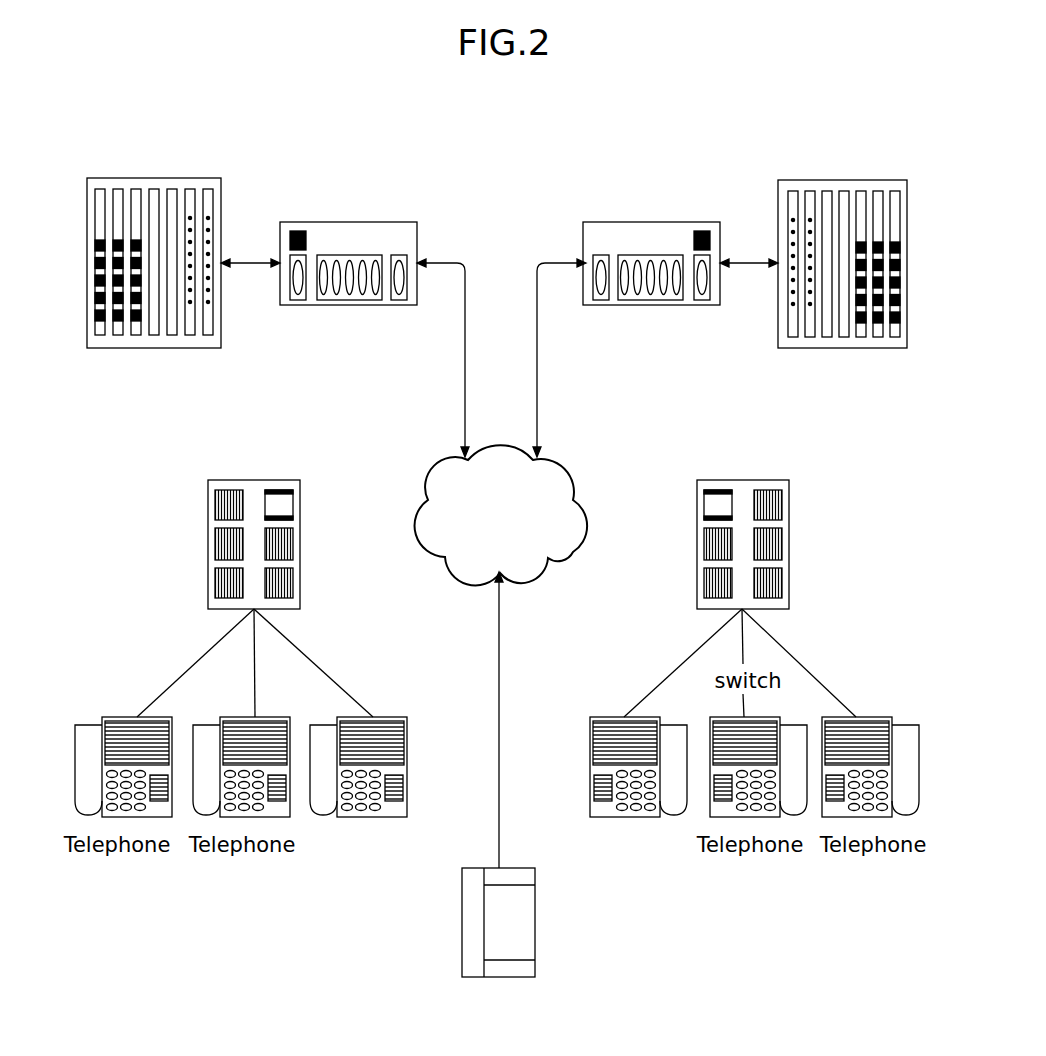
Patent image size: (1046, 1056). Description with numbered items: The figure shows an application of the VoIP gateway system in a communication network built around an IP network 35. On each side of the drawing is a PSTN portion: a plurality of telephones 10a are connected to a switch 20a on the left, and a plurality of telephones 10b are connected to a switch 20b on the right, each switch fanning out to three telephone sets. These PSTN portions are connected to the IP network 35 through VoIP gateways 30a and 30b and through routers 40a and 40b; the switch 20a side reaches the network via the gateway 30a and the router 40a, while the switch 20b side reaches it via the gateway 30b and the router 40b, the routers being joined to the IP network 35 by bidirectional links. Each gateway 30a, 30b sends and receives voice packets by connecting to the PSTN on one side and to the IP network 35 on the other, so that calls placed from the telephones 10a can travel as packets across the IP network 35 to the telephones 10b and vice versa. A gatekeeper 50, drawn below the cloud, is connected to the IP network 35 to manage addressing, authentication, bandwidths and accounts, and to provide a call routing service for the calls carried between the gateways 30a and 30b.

The telephone 10a is at (403, 771).
The telephone 10b is at (594, 771).
The switch 20a is at (288, 564).
The switch 20b is at (708, 564).
The VoIP gateway 30a is at (153, 187).
The VoIP gateway 30b is at (845, 189).
The IP network 35 is at (570, 476).
The router 40a is at (350, 231).
The router 40b is at (650, 231).
The gatekeeper 50 is at (524, 923).